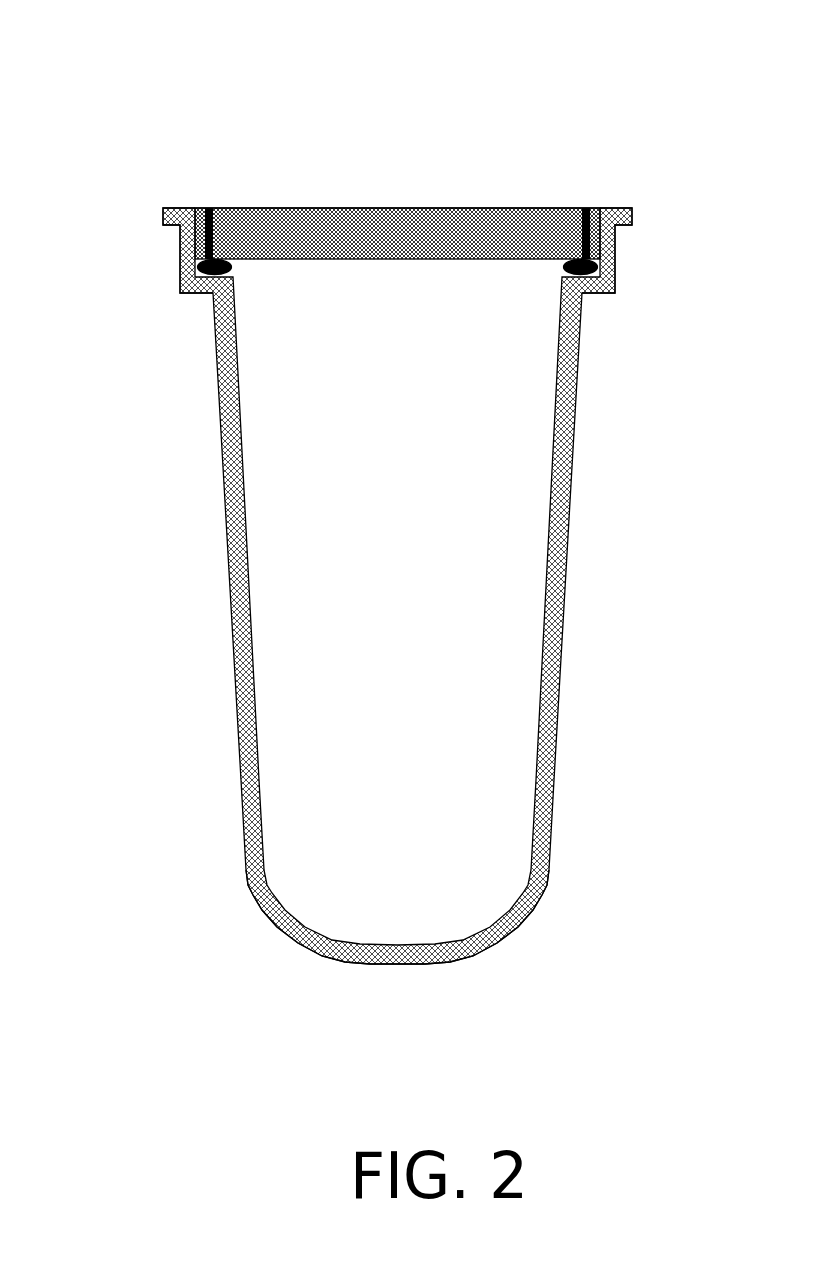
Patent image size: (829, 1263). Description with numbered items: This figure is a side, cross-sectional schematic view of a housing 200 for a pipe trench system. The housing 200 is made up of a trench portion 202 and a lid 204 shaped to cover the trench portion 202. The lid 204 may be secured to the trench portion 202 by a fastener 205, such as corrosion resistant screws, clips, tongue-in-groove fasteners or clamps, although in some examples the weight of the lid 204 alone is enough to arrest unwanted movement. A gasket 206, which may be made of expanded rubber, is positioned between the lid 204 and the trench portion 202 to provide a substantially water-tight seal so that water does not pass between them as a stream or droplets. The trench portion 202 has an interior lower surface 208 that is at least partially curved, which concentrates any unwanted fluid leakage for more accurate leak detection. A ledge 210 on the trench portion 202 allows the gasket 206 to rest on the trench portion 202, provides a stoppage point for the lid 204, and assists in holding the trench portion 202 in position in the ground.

The housing 200 is at (190, 51).
The trench portion 202 is at (217, 407).
The lid 204 is at (564, 208).
The fastener 205 is at (205, 208).
The gasket 206 is at (617, 293).
The interior lower surface 208 is at (398, 943).
The ledge 210 is at (180, 248).